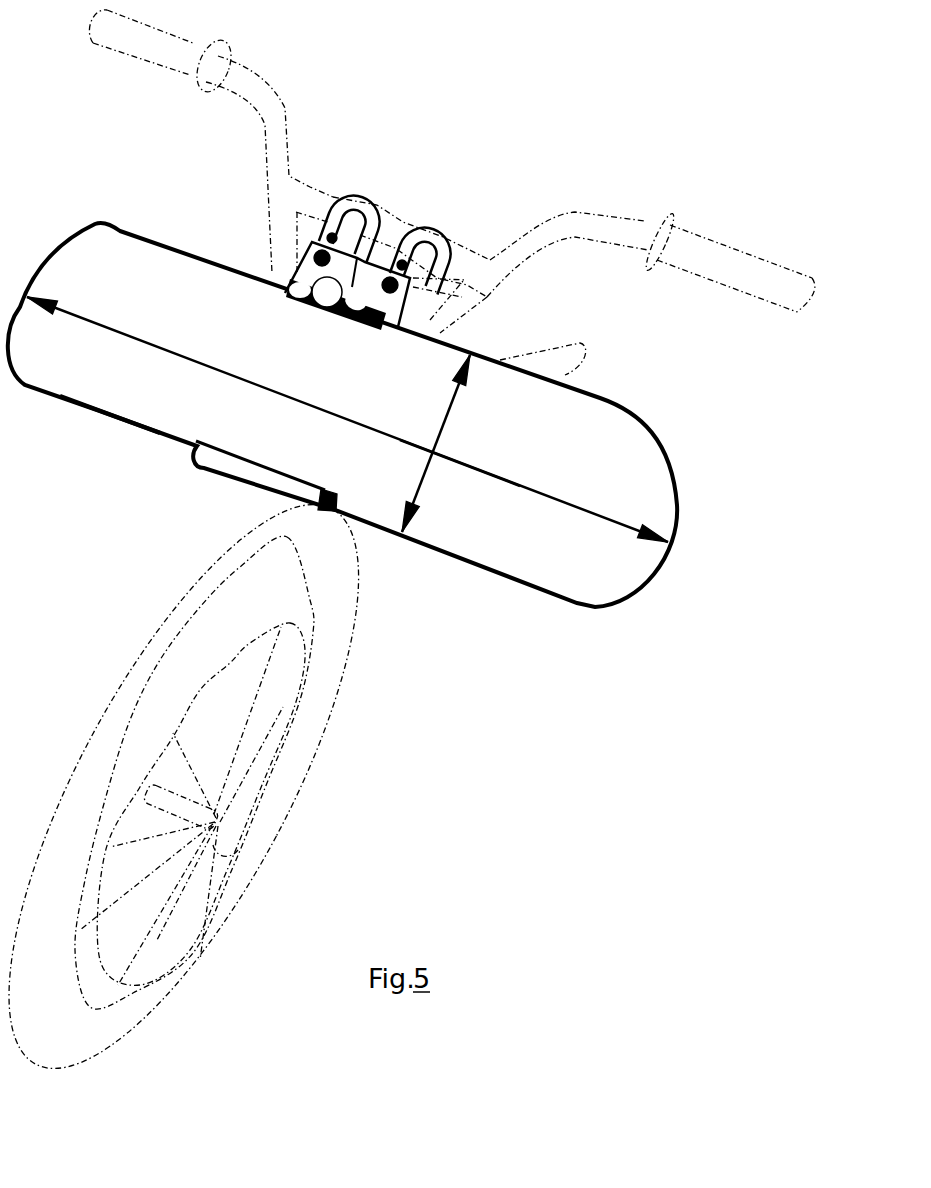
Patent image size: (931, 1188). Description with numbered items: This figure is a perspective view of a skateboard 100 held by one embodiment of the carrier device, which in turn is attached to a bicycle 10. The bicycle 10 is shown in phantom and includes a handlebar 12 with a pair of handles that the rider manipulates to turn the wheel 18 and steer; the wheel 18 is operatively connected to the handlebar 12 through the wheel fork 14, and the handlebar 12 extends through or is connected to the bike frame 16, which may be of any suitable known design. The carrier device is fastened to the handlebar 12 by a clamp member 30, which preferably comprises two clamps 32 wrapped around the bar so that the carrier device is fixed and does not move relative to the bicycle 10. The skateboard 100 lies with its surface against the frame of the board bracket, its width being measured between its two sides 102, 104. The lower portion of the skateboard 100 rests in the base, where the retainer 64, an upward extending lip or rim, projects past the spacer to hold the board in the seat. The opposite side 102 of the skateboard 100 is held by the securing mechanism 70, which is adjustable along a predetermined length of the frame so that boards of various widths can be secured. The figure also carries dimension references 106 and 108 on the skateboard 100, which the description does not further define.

The bicycle 10 is at (575, 209).
The handlebar 12 is at (478, 257).
The wheel fork 14 is at (195, 572).
The bike frame 16 is at (553, 347).
The wheel 18 is at (121, 698).
The clamp member 30 is at (342, 190).
The clamps 32 is at (368, 205).
The retainer 64 is at (213, 458).
The securing mechanism 70 is at (287, 284).
The skateboard 100 is at (268, 346).
The side of skateboard 102 is at (181, 253).
The side of skateboard 104 is at (97, 410).
The pad width 106 is at (451, 391).
The pad longitudinal axis 108 is at (548, 466).